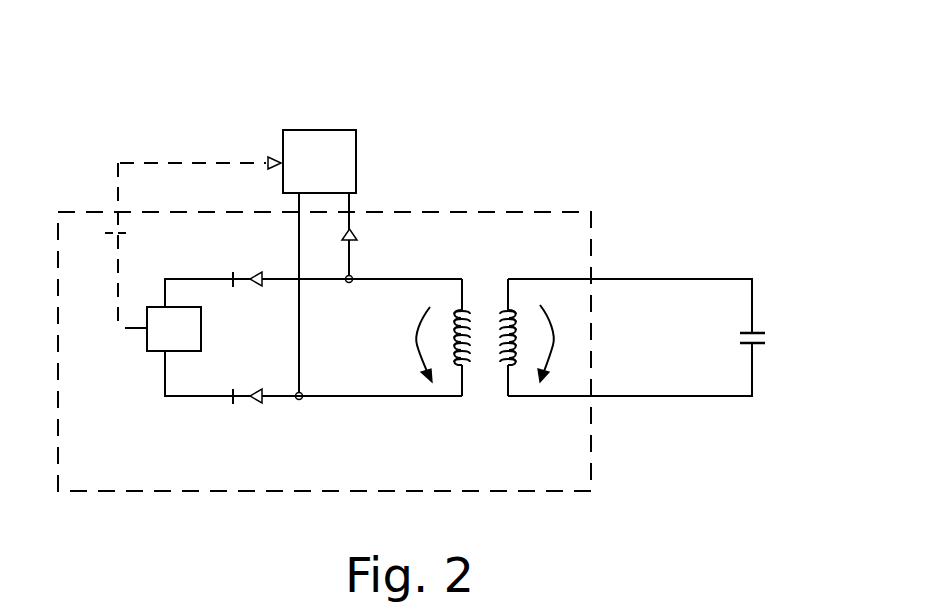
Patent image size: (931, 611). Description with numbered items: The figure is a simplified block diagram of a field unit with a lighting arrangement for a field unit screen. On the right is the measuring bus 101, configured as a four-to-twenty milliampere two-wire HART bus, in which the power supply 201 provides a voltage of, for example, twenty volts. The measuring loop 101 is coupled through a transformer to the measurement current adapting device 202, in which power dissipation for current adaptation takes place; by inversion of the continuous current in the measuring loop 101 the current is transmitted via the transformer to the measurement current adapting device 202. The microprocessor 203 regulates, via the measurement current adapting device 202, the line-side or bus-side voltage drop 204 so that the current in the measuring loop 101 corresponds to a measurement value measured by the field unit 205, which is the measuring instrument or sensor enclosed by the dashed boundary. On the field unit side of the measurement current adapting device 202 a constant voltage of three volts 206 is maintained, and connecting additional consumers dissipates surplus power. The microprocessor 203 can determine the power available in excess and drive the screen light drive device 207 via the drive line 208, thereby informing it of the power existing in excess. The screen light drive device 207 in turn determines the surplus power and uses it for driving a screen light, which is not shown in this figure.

The measuring bus 101 is at (653, 287).
The power supply 201 is at (758, 325).
The measurement current adapting device 202 is at (490, 408).
The microprocessor 203 is at (148, 342).
The line-side voltage drop 204 is at (553, 302).
The field unit 205 is at (443, 212).
The constant voltage of 3 V 206 is at (412, 353).
The screen light drive device 207 is at (320, 130).
The drive line 208 is at (203, 163).